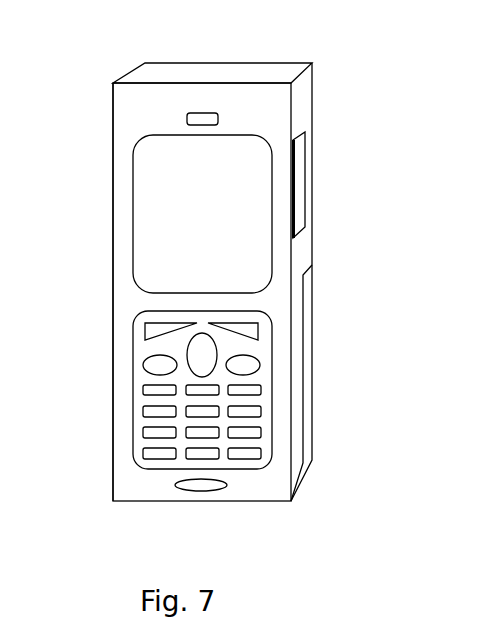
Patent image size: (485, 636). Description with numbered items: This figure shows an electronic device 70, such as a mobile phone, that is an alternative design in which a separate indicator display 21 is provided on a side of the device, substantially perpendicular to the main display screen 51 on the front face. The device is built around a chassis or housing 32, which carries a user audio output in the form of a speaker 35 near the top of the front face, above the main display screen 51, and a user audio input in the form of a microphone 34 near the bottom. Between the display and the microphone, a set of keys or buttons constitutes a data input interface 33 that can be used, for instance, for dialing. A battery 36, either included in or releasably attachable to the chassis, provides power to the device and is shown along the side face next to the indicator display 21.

The electronic device 70 is at (251, 259).
The housing 32 is at (113, 112).
The speaker 35 is at (188, 121).
The main display screen 51 is at (209, 220).
The indicator display 21 is at (298, 187).
The battery 36 is at (303, 395).
The data input interface 33 is at (138, 360).
The microphone 34 is at (192, 490).